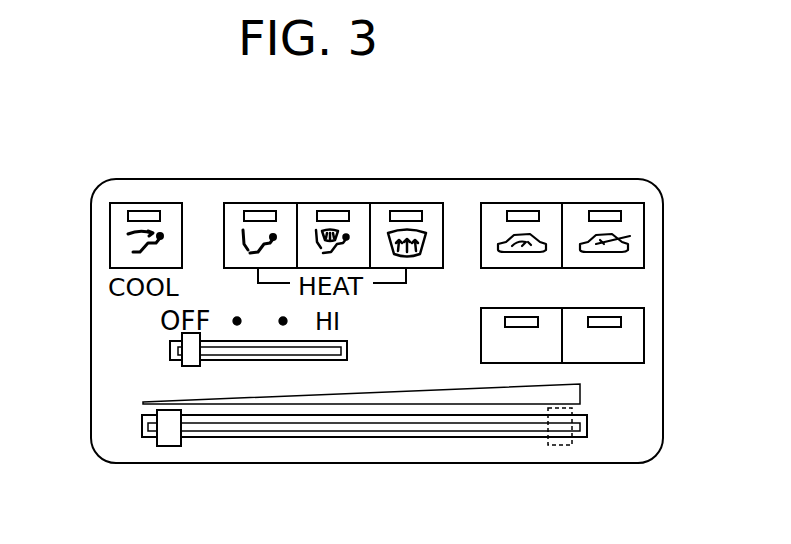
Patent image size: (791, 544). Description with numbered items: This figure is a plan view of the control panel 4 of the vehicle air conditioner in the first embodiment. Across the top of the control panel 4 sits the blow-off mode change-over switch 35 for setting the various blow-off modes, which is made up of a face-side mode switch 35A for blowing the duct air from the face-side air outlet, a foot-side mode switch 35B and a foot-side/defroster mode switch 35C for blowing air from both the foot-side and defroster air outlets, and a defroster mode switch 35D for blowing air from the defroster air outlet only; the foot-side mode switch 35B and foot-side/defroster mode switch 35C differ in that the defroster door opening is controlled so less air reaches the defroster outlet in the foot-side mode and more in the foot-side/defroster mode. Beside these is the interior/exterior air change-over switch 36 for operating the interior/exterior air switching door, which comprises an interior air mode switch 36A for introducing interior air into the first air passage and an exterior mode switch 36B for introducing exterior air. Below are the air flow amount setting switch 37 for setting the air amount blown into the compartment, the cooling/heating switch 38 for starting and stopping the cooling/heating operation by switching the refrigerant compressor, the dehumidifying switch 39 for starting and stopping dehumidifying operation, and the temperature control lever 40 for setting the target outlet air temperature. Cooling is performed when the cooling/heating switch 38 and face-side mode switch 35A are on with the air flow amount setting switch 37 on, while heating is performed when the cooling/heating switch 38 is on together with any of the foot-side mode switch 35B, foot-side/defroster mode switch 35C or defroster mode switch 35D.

The control panel 4 is at (672, 291).
The blow-off mode change-over switch 35 is at (447, 136).
The face-side mode switch 35A is at (143, 203).
The foot-side mode switch 35B is at (263, 203).
The foot-side/defroster mode switch 35C is at (333, 203).
The defroster mode switch 35D is at (413, 203).
The interior/exterior air change-over switch 36 is at (638, 136).
The interior air mode switch 36A is at (518, 203).
The exterior mode switch 36B is at (600, 203).
The air flow amount setting switch 37 is at (181, 363).
The cooling/heating switch 38 is at (552, 363).
The dehumidifying switch 39 is at (644, 322).
The temperature control lever 40 is at (155, 445).